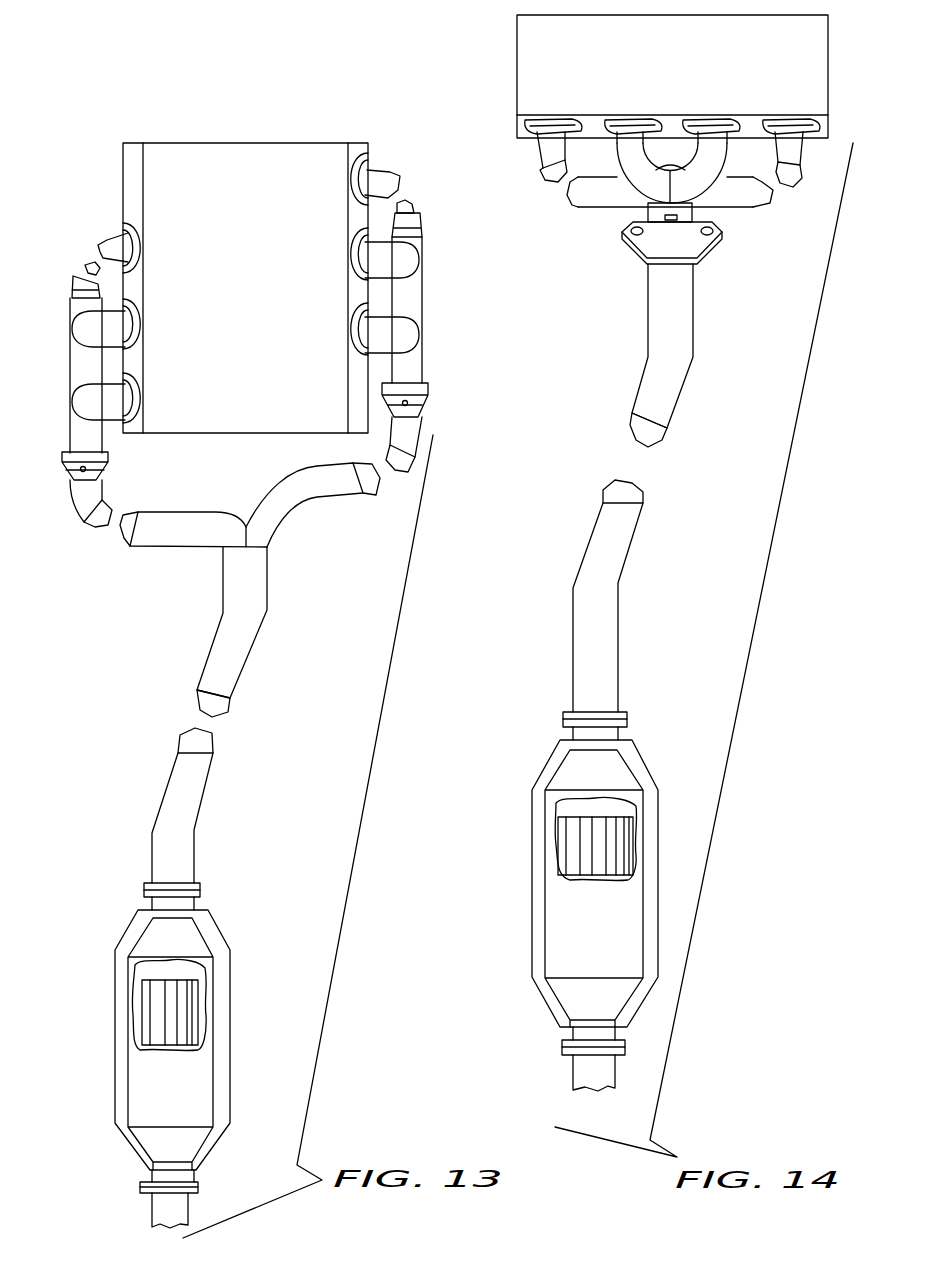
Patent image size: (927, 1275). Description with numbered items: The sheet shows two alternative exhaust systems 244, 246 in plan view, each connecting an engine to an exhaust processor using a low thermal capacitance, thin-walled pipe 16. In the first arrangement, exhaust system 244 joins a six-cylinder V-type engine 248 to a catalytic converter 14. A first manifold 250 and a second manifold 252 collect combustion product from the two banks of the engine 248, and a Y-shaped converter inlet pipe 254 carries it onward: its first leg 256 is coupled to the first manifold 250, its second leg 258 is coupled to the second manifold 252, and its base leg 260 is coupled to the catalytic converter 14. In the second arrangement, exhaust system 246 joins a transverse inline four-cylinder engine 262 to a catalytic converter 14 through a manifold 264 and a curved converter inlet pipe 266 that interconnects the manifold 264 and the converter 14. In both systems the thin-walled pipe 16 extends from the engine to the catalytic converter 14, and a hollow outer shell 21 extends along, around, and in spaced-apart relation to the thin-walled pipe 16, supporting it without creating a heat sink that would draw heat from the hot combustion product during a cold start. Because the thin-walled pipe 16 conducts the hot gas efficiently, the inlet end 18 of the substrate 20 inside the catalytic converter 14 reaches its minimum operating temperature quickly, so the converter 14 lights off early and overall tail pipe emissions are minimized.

In FIG. 13, the catalytic converter 14 is at (185, 978).
In FIG. 14, the catalytic converter 14 is at (570, 785).
In FIG. 13, the thin-walled pipe 16 is at (88, 268).
In FIG. 14, the thin-walled pipe 16 is at (548, 179).
In FIG. 13, the inlet end of the substrate 18 is at (168, 980).
In FIG. 14, the inlet end of the substrate 18 is at (593, 820).
In FIG. 13, the substrate 20 is at (183, 1015).
In FIG. 14, the substrate 20 is at (631, 831).
In FIG. 13, the hollow outer shell 21 is at (60, 437).
In FIG. 14, the hollow outer shell 21 is at (588, 213).
In FIG. 13, the exhaust system 244 is at (153, 705).
In FIG. 14, the exhaust system 246 is at (619, 458).
In FIG. 13, the six-cylinder engine 248 is at (190, 146).
In FIG. 13, the first manifold 250 is at (62, 313).
In FIG. 13, the second manifold 252 is at (430, 257).
In FIG. 13, the Y-shaped converter inlet pipe 254 is at (244, 569).
In FIG. 13, the first leg 256 is at (180, 518).
In FIG. 13, the second leg 258 is at (283, 494).
In FIG. 13, the base leg 260 is at (218, 665).
In FIG. 14, the four-cylinder engine 262 is at (517, 87).
In FIG. 14, the manifold 264 is at (782, 212).
In FIG. 14, the curved converter inlet pipe 266 is at (682, 417).